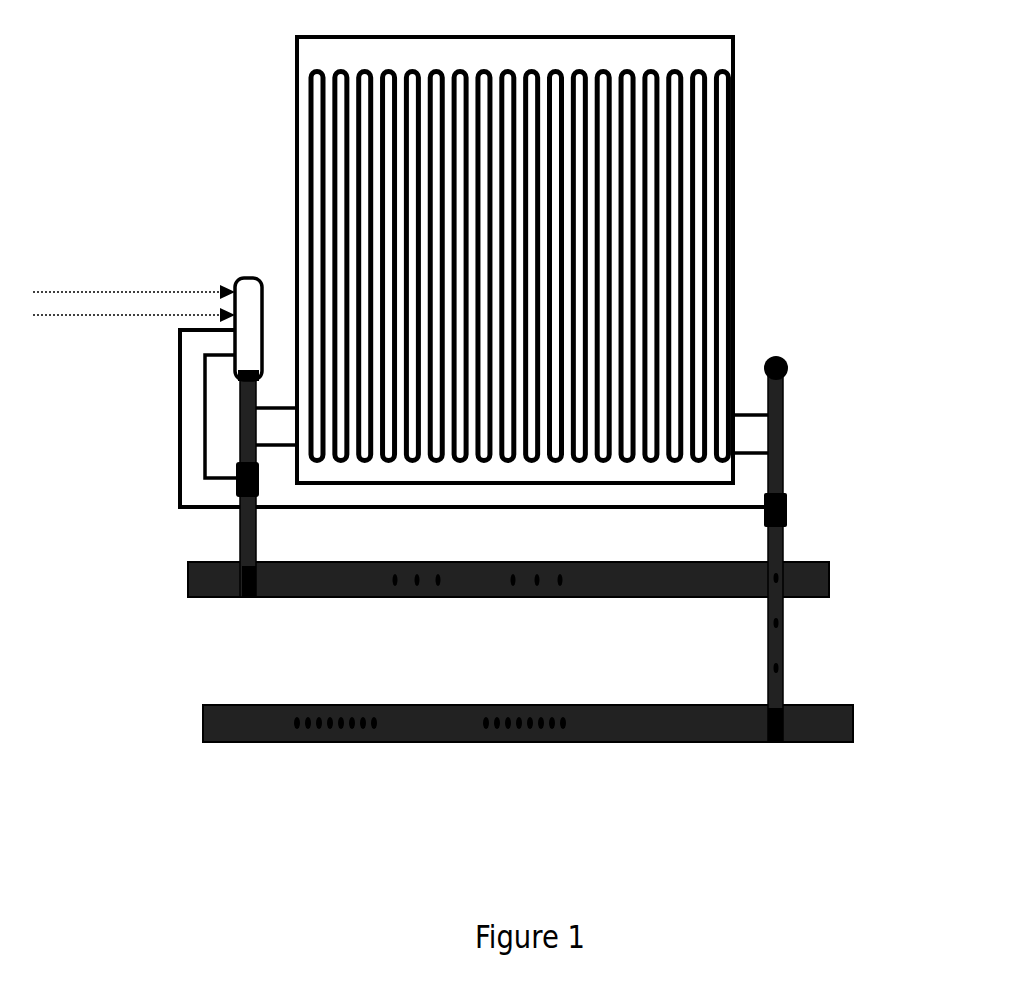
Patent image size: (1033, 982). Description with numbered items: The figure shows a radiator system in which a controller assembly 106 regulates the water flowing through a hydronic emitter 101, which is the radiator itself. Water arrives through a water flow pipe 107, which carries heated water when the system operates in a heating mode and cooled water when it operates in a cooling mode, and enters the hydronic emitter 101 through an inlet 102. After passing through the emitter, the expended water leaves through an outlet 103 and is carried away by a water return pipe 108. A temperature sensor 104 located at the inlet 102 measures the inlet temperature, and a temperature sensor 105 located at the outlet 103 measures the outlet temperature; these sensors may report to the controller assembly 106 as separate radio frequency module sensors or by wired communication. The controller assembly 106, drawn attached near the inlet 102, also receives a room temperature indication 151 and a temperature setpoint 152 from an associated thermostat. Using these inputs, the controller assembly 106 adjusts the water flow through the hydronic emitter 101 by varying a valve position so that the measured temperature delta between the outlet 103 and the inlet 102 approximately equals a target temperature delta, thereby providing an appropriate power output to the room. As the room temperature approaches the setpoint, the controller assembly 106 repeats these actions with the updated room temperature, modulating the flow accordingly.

The hydronic emitter 101 is at (748, 164).
The inlet 102 is at (265, 538).
The outlet 103 is at (770, 556).
The temperature sensor 104 is at (240, 497).
The temperature sensor 105 is at (800, 510).
The controller assembly 106 is at (240, 277).
The water flow pipe 107 is at (430, 598).
The water return pipe 108 is at (447, 744).
The room temperature input 151 is at (172, 288).
The set point input 152 is at (151, 320).